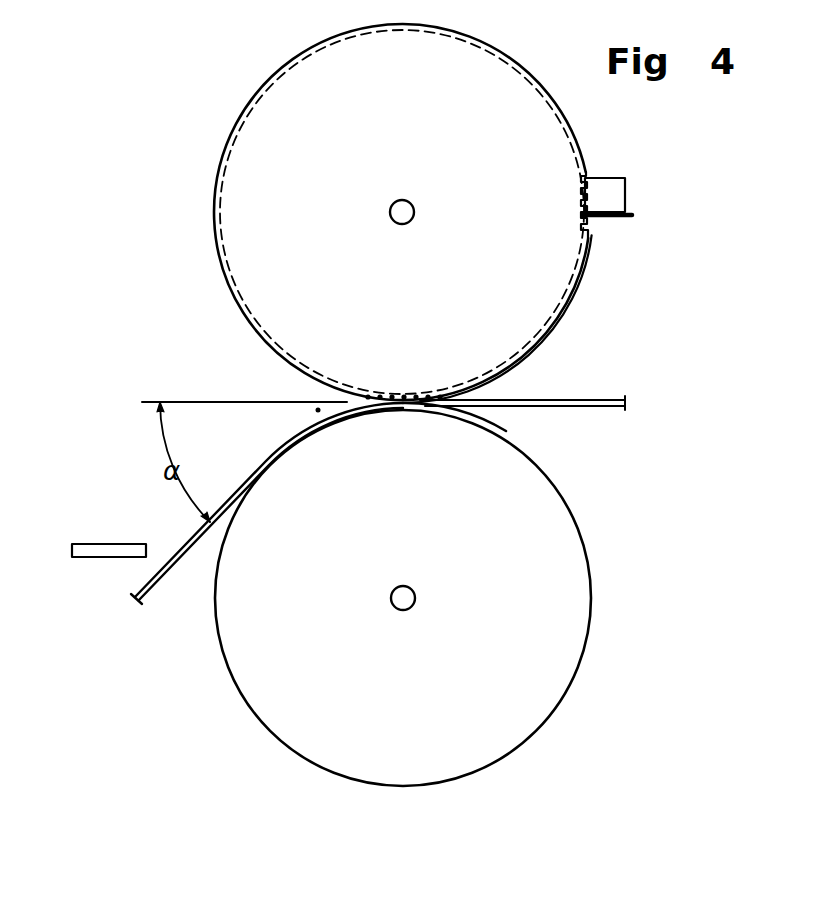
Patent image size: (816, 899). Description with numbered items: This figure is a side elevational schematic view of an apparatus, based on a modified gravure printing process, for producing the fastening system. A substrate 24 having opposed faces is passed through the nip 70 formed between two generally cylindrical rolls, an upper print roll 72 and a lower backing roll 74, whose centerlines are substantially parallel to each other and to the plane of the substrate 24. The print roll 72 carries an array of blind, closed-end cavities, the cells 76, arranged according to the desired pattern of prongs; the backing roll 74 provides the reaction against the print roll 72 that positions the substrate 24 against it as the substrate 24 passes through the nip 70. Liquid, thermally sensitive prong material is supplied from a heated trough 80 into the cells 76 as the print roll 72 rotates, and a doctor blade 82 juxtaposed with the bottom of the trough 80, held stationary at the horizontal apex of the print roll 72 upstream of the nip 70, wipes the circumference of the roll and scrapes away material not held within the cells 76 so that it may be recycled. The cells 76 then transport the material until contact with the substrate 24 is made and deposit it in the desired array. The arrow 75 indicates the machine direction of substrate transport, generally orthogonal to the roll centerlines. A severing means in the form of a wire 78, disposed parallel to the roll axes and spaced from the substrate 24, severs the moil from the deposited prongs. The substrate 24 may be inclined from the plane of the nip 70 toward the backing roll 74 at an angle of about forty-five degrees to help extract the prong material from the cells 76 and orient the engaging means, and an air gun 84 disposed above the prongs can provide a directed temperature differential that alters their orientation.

The substrate 24 is at (560, 400).
The nip 70 is at (403, 406).
The print roll 72 is at (442, 96).
The backing roll 74 is at (464, 658).
The arrow indicating machine direction 75 is at (521, 318).
The cells 76 is at (583, 173).
The severing means (wire) 78 is at (318, 410).
The trough 80 is at (624, 190).
The doctor blade 82 is at (592, 219).
The air gun 84 is at (100, 548).